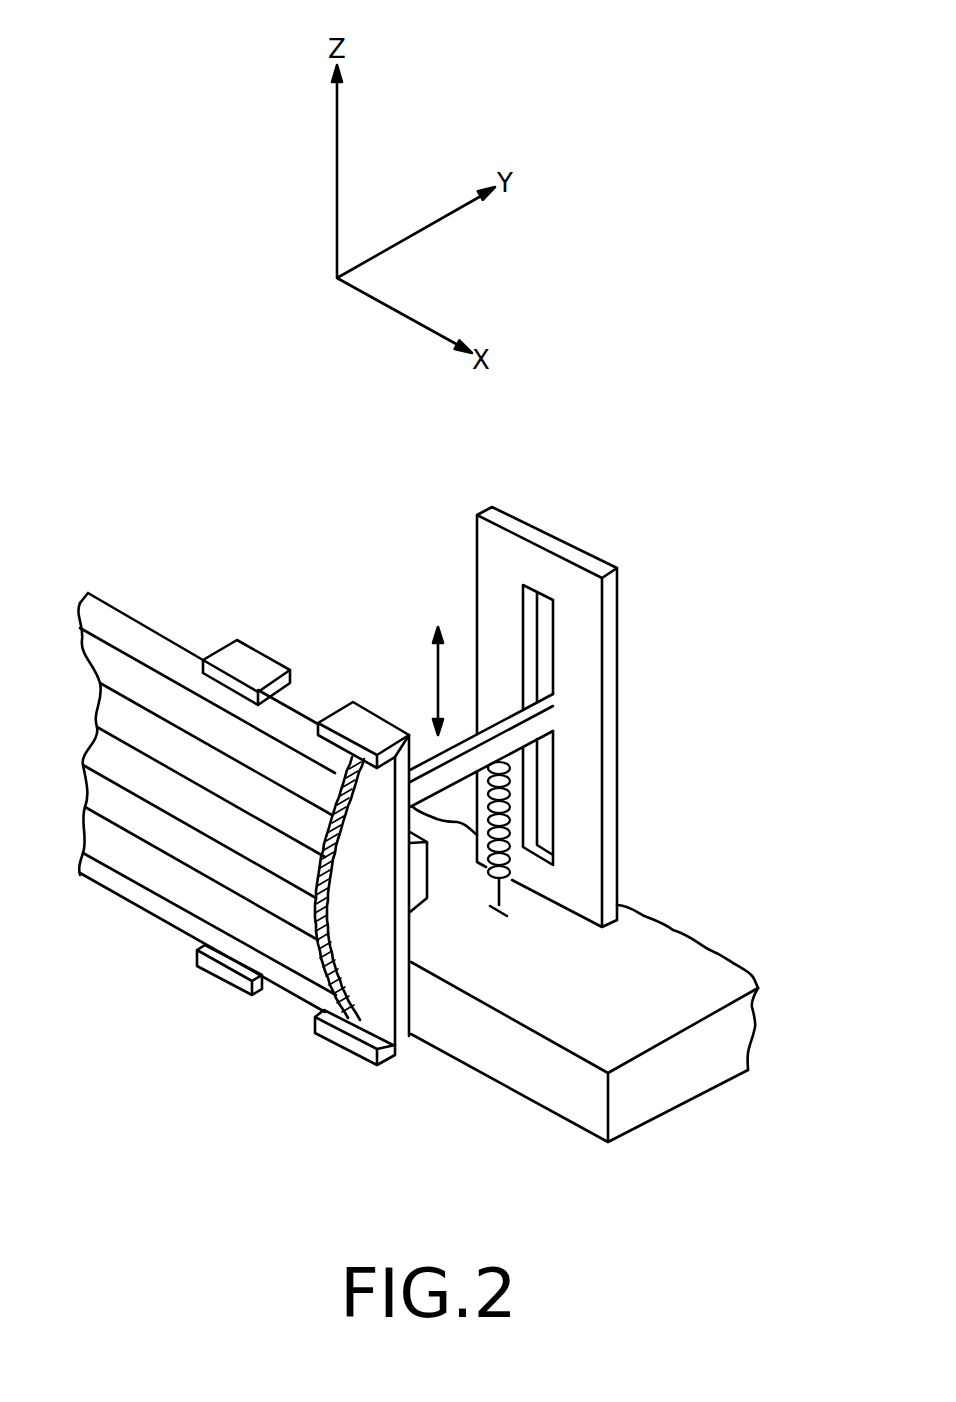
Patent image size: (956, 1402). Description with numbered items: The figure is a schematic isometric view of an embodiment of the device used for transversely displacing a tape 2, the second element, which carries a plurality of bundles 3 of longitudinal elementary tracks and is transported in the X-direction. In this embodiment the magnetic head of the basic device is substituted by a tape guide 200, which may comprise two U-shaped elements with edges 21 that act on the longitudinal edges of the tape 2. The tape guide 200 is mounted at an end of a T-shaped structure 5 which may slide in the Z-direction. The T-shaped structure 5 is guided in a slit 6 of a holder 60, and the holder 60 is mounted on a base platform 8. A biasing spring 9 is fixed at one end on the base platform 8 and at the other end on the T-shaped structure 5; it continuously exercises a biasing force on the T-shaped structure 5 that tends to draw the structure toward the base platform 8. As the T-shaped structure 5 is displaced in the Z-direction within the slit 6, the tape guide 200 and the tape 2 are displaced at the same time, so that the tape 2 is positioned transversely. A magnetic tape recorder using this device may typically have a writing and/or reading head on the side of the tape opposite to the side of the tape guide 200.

The tape 2 is at (112, 606).
The bundles of longitudinal elementary tracks 3 is at (150, 730).
The edges 21 is at (340, 1042).
The tape guide 200 is at (378, 968).
The T-shaped structure 5 is at (435, 765).
The slit 6 is at (543, 606).
The holder 60 is at (497, 590).
The biasing spring 9 is at (492, 870).
The base platform 8 is at (651, 1030).